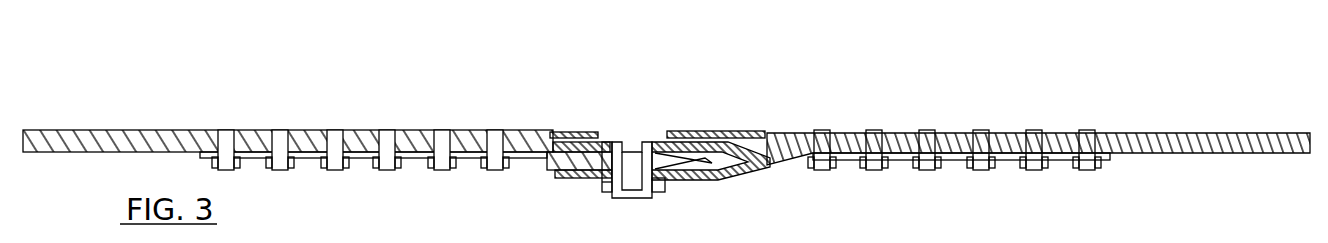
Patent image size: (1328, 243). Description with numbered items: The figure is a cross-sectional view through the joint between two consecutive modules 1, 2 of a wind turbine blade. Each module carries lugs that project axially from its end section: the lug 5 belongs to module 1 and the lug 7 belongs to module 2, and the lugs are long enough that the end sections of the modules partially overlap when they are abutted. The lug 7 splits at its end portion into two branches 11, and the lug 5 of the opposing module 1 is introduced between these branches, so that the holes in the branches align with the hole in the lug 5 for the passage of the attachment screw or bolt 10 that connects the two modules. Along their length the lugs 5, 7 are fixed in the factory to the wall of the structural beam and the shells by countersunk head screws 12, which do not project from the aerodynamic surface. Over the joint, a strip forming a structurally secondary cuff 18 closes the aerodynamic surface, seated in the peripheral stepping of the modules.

The module 1 is at (157, 135).
The module 2 is at (1157, 140).
The lug 5 is at (475, 153).
The lug 7 is at (758, 163).
The attachment screw or bolt 10 is at (633, 183).
The branches 11 is at (578, 145).
The countersunk head screws 12 is at (387, 147).
The cuff 18 is at (715, 132).